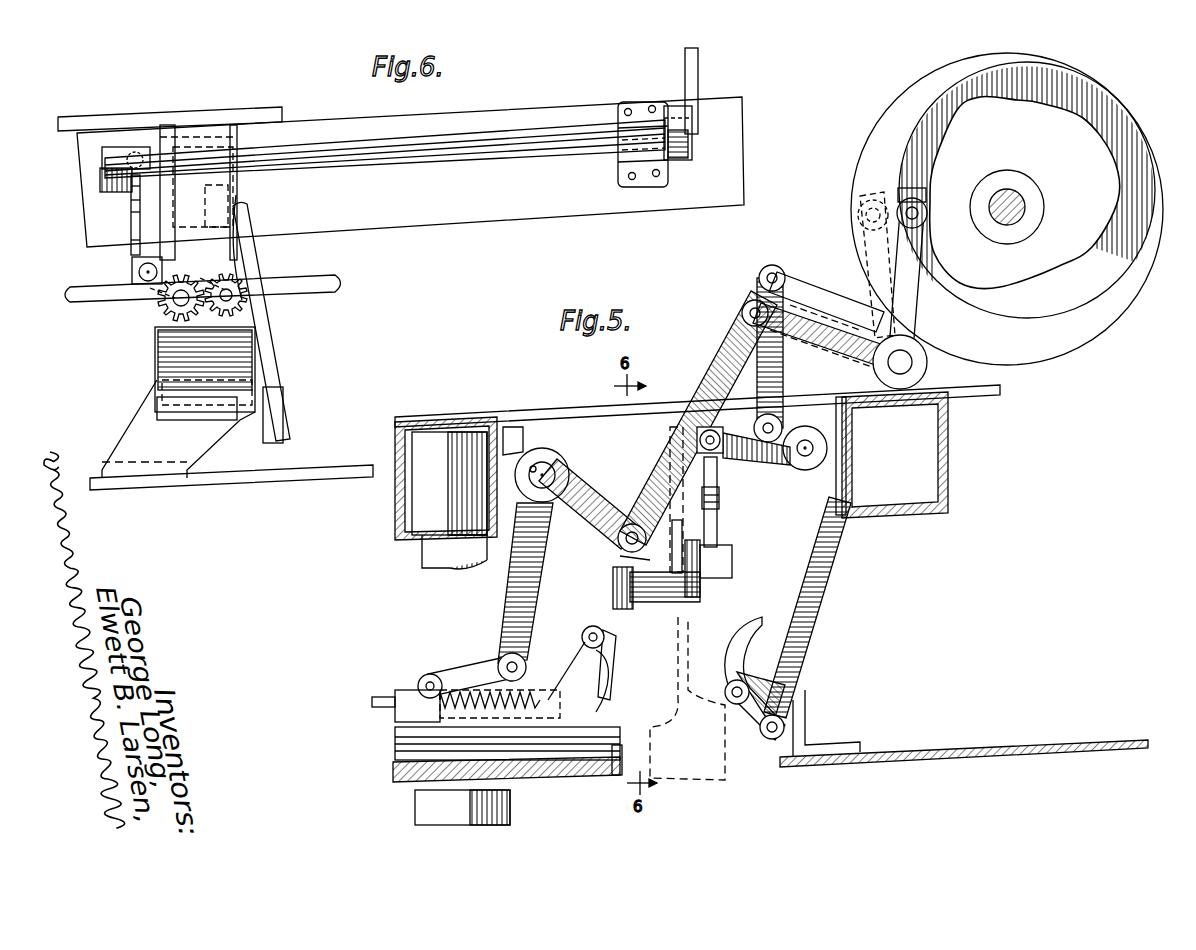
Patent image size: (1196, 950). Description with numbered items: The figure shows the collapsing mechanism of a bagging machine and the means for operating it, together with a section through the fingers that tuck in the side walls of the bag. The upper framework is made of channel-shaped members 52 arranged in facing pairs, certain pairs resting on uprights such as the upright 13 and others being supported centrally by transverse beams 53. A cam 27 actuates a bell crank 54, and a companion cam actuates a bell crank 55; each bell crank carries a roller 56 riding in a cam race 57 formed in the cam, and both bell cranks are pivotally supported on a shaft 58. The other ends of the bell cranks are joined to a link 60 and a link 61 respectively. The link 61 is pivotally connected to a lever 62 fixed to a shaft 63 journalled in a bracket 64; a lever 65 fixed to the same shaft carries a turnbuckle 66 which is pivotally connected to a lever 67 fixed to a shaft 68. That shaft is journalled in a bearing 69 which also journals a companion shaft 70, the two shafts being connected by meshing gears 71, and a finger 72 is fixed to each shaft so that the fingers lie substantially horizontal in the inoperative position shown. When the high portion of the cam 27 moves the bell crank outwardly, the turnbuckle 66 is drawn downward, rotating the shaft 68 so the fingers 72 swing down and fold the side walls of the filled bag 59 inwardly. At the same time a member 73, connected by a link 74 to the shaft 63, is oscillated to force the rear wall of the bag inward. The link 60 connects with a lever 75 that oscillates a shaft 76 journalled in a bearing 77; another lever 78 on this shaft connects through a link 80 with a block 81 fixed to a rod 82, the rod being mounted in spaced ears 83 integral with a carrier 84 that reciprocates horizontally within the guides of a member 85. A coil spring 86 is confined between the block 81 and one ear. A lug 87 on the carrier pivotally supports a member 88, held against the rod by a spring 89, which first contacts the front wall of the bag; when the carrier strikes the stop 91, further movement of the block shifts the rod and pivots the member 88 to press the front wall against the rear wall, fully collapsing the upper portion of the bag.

In FIG. 5, the upright 13 is at (420, 556).
In FIG. 5, the cam 27 is at (1114, 301).
In FIG. 6, the channel-shaped member 52 is at (488, 212).
In FIG. 5, the channel-shaped member 52 is at (395, 508).
In FIG. 5, the transverse beam 53 is at (585, 412).
In FIG. 5, the bell crank 54 is at (820, 346).
In FIG. 5, the bell crank 55 is at (826, 296).
In FIG. 5, the roller 56 is at (928, 215).
In FIG. 5, the cam race 57 is at (1124, 267).
In FIG. 5, the shaft 58 is at (927, 364).
In FIG. 5, the bag 59 is at (724, 762).
In FIG. 5, the link 60 is at (727, 348).
In FIG. 6, the link 61 is at (698, 72).
In FIG. 5, the link 61 is at (762, 368).
In FIG. 6, the lever 62 is at (692, 139).
In FIG. 5, the lever 62 is at (769, 445).
In FIG. 6, the shaft 63 is at (493, 150).
In FIG. 5, the shaft 63 is at (805, 462).
In FIG. 6, the bracket 64 is at (668, 168).
In FIG. 5, the bracket 64 is at (848, 435).
In FIG. 6, the lever 65 is at (112, 148).
In FIG. 5, the lever 65 is at (740, 460).
In FIG. 6, the turnbuckle 66 is at (130, 229).
In FIG. 5, the turnbuckle 66 is at (720, 520).
In FIG. 6, the lever 67 is at (160, 296).
In FIG. 5, the lever 67 is at (732, 553).
In FIG. 6, the shaft 68 is at (185, 292).
In FIG. 6, the bearing 69 is at (188, 208).
In FIG. 5, the bearing 69 is at (651, 604).
In FIG. 6, the companion shaft 70 is at (234, 290).
In FIG. 6, the meshing gear 71 is at (242, 306).
In FIG. 5, the meshing gear 71 is at (624, 558).
In FIG. 6, the finger 72 is at (321, 276).
In FIG. 5, the finger 72 is at (682, 545).
In FIG. 6, the member 73 is at (155, 355).
In FIG. 5, the member 73 is at (742, 636).
In FIG. 6, the link 74 is at (278, 352).
In FIG. 5, the link 74 is at (840, 547).
In FIG. 5, the lever 75 is at (633, 524).
In FIG. 5, the shaft 76 is at (546, 468).
In FIG. 5, the bearing 77 is at (534, 447).
In FIG. 5, the lever 78 is at (500, 581).
In FIG. 5, the link 80 is at (480, 665).
In FIG. 5, the block 81 is at (420, 682).
In FIG. 5, the rod 82 is at (382, 697).
In FIG. 5, the ear 83 is at (395, 718).
In FIG. 5, the carrier 84 is at (395, 750).
In FIG. 5, the member 85 is at (547, 776).
In FIG. 5, the coil spring 86 is at (515, 690).
In FIG. 5, the lug 87 is at (593, 626).
In FIG. 5, the member 88 is at (672, 661).
In FIG. 5, the spring 89 is at (575, 655).
In FIG. 5, the stop 91 is at (619, 750).